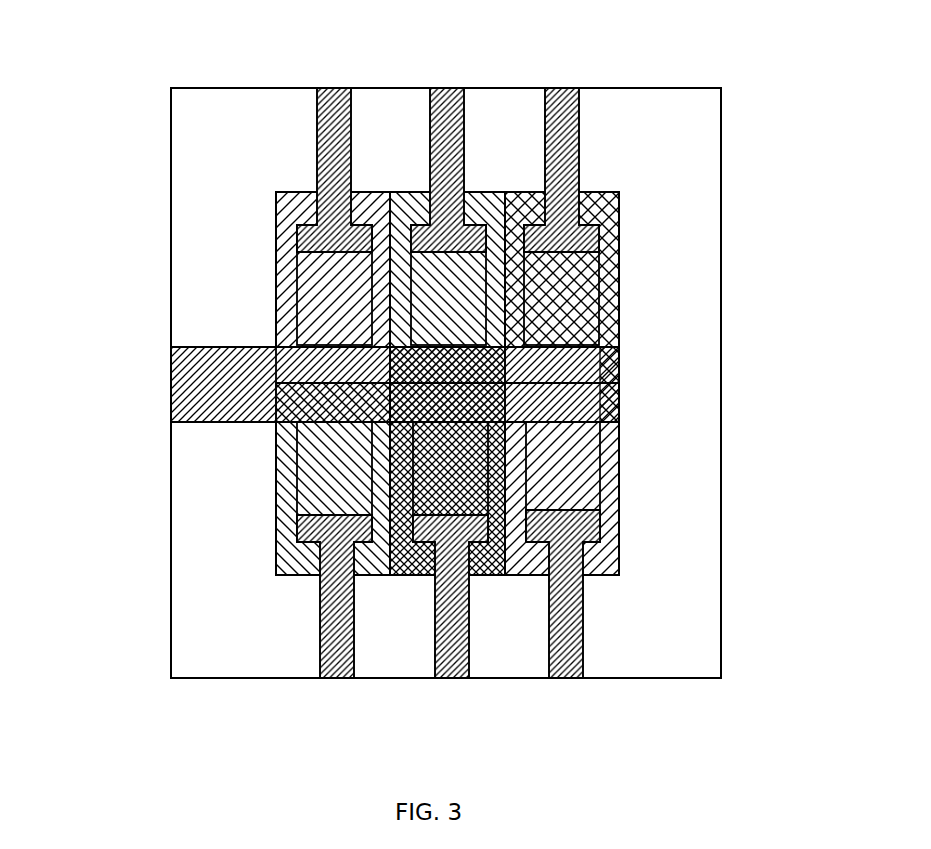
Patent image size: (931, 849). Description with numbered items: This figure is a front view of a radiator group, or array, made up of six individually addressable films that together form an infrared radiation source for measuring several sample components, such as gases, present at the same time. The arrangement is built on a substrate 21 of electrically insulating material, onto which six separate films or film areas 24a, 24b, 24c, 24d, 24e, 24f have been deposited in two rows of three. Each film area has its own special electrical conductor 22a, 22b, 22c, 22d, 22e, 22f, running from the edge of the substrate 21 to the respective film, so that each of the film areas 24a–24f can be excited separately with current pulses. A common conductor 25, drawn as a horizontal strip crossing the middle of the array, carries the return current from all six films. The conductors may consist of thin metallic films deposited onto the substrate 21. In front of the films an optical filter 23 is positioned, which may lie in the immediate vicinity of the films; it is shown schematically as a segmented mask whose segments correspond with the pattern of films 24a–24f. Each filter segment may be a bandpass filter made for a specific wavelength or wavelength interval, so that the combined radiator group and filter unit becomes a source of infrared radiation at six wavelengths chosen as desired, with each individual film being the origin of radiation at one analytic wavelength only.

The substrate 21 is at (228, 87).
The electrical conductor 22a is at (333, 87).
The electrical conductor 22b is at (448, 87).
The electrical conductor 22c is at (565, 87).
The electrical conductor 22d is at (340, 680).
The electrical conductor 22e is at (452, 680).
The electrical conductor 22f is at (565, 680).
The optical filter 23 is at (275, 208).
The film area 24a is at (300, 272).
The film area 24b is at (410, 324).
The film area 24c is at (592, 297).
The film area 24d is at (300, 452).
The film area 24e is at (415, 475).
The film area 24f is at (596, 452).
The common conductor 25 is at (172, 393).